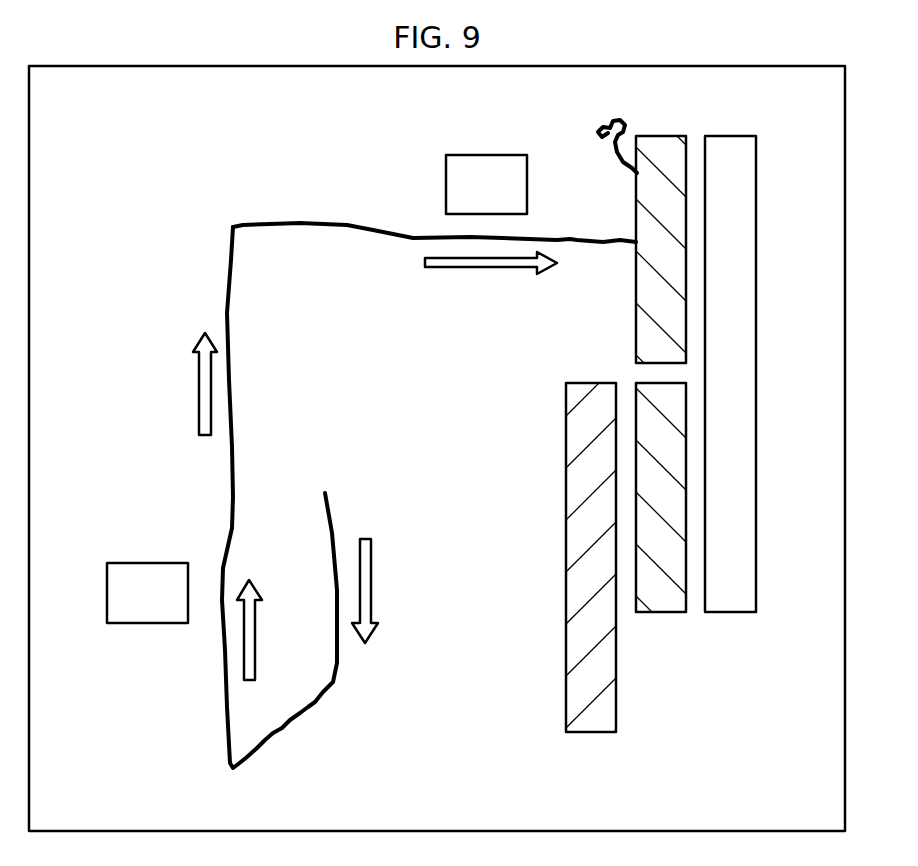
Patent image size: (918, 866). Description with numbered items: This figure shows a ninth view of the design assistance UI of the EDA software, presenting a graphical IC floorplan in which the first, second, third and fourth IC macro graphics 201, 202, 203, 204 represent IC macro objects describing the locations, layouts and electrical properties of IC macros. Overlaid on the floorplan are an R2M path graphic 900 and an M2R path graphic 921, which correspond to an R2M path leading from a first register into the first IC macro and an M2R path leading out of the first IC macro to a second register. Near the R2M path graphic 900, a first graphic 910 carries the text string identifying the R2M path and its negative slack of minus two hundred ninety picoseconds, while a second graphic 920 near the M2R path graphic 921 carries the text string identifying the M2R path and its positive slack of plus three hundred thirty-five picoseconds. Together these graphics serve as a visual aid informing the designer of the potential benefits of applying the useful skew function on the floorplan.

The R2M path graphic 900 is at (283, 224).
The first graphic 910 is at (148, 624).
The second graphic 920 is at (446, 186).
The M2R path graphic 921 is at (590, 133).
The first IC macro graphic 201 is at (660, 136).
The second IC macro graphic 202 is at (665, 612).
The third IC macro graphic 203 is at (595, 732).
The fourth IC macro graphic 204 is at (735, 136).